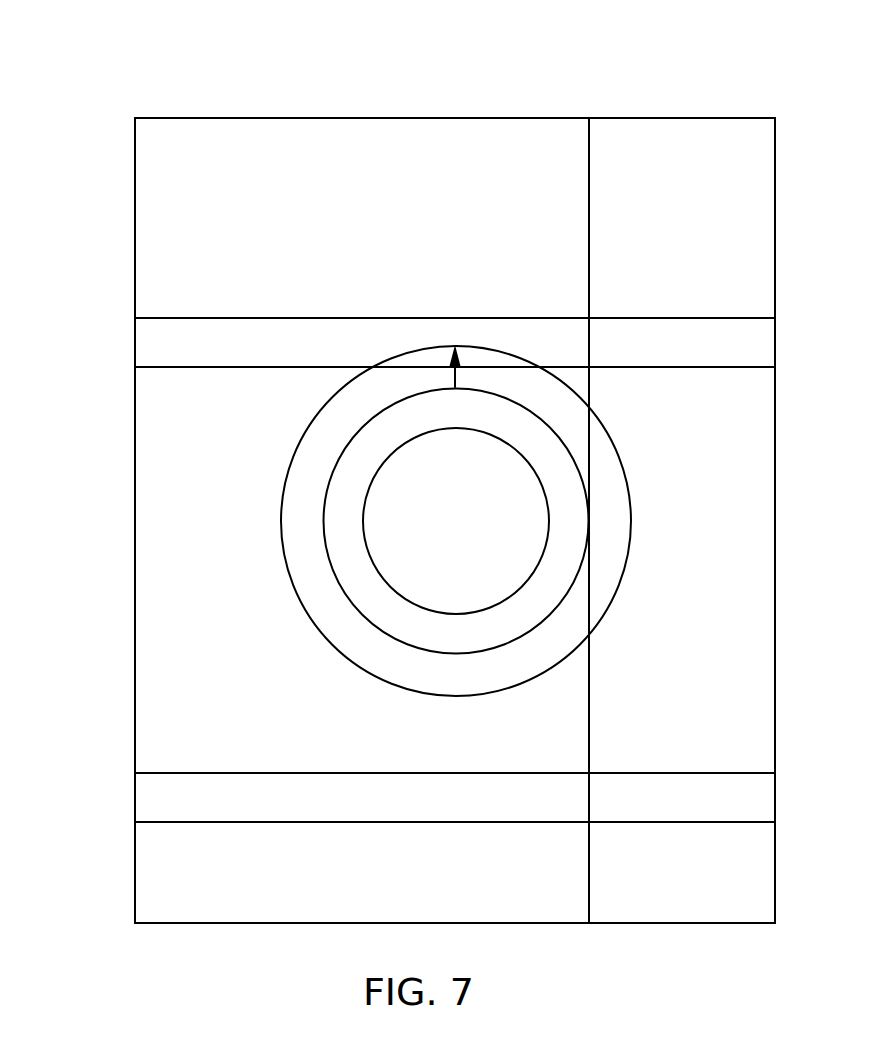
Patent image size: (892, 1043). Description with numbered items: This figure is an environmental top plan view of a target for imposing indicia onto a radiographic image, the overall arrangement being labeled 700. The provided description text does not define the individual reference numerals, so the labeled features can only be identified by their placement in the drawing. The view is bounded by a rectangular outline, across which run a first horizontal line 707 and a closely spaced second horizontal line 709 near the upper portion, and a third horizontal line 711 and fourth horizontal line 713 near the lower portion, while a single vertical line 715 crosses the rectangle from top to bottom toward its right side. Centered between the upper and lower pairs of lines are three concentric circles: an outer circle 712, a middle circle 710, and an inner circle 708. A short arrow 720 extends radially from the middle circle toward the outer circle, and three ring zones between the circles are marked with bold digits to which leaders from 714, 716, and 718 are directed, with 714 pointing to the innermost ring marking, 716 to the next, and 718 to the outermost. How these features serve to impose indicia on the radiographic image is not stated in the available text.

The display panel / pixel structure 700 is at (714, 70).
The first horizontal line 707 is at (170, 318).
The inner circular region 708 is at (517, 592).
The second horizontal line 709 is at (152, 367).
The middle circular region 710 is at (580, 574).
The third horizontal line 711 is at (157, 773).
The outer circular region 712 is at (630, 498).
The fourth horizontal line 713 is at (157, 822).
The region 2 714 is at (360, 545).
The vertical line 715 is at (590, 894).
The region 3 716 is at (317, 543).
The region 4 718 is at (273, 526).
The radial direction arrow 720 is at (455, 345).